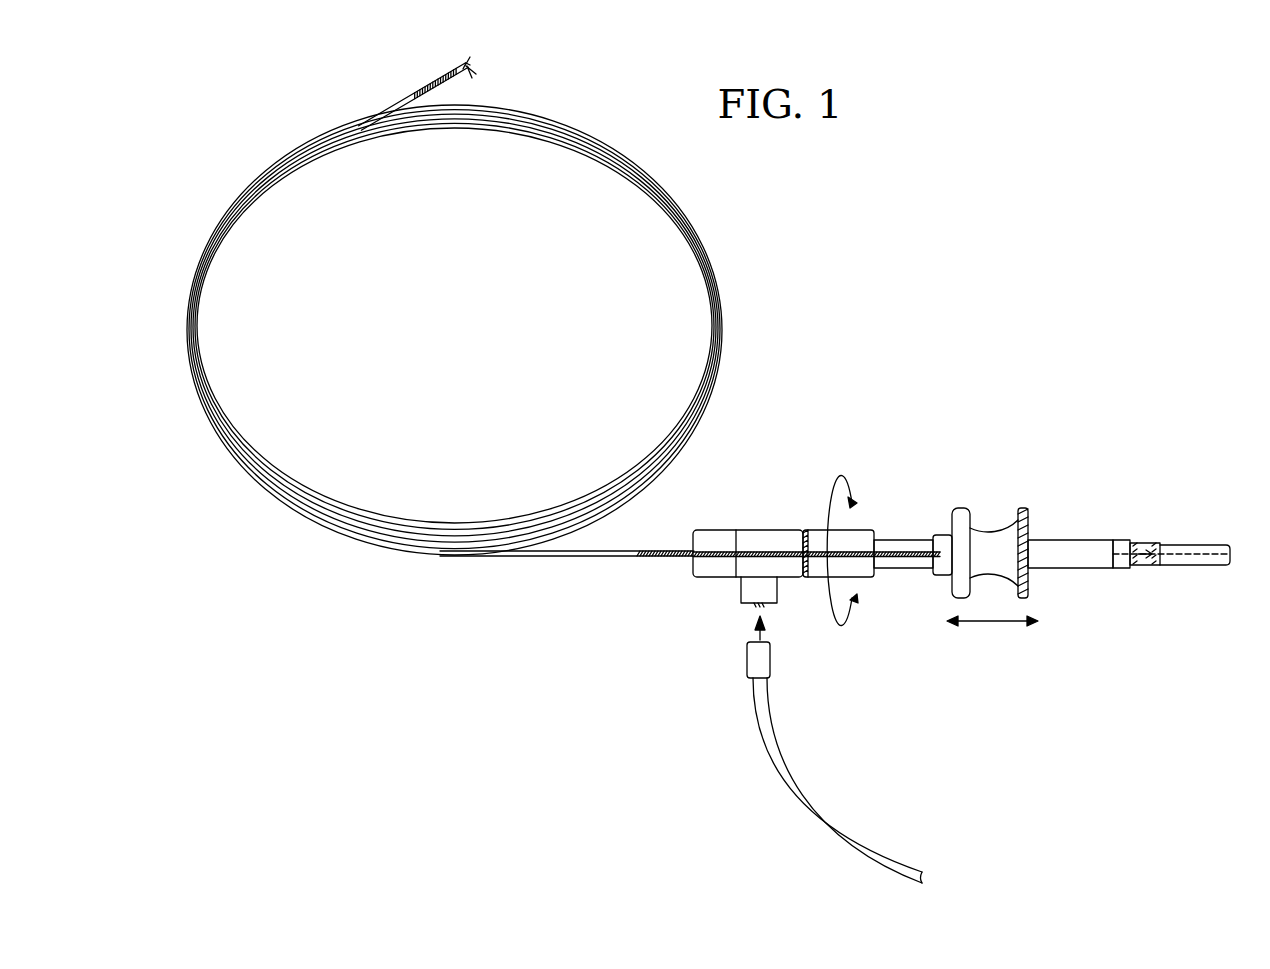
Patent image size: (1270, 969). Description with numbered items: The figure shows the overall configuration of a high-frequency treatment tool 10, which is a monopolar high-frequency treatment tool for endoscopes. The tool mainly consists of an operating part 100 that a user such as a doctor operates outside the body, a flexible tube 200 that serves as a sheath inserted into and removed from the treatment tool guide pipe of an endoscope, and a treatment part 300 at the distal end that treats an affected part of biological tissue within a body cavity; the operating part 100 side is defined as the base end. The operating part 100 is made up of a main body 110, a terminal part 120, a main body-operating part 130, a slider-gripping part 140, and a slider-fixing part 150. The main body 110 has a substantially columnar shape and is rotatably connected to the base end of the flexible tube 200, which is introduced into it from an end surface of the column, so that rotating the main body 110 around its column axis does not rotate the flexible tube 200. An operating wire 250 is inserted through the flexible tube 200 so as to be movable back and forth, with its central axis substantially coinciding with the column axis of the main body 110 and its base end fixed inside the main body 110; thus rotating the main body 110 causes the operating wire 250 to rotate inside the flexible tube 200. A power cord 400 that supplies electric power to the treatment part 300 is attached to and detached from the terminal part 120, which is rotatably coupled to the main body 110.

The high-frequency treatment tool 10 is at (184, 76).
The operating part 100 is at (1061, 394).
The main body 110 is at (930, 538).
The terminal part 120 is at (763, 530).
The main body-operating part 130 is at (817, 530).
The slider-gripping part 140 is at (985, 540).
The slider-fixing part 150 is at (940, 570).
The flexible tube 200 is at (448, 556).
The operating wire 250 is at (421, 101).
The treatment part 300 is at (454, 59).
The power cord 400 is at (782, 781).